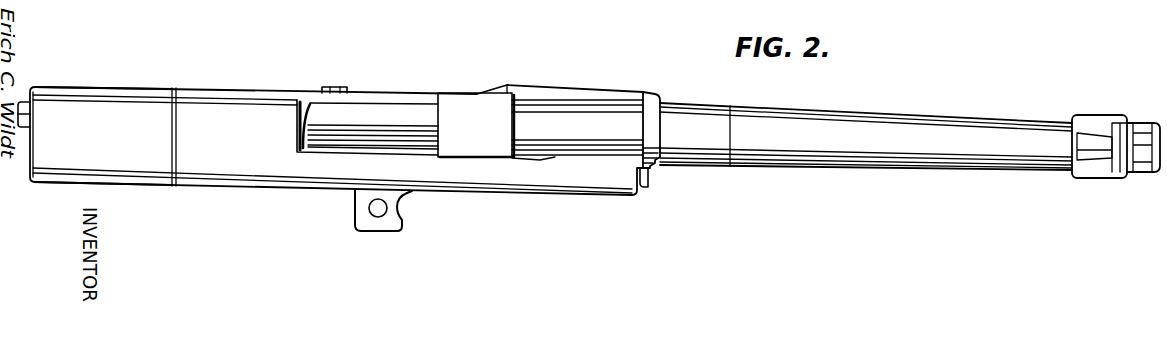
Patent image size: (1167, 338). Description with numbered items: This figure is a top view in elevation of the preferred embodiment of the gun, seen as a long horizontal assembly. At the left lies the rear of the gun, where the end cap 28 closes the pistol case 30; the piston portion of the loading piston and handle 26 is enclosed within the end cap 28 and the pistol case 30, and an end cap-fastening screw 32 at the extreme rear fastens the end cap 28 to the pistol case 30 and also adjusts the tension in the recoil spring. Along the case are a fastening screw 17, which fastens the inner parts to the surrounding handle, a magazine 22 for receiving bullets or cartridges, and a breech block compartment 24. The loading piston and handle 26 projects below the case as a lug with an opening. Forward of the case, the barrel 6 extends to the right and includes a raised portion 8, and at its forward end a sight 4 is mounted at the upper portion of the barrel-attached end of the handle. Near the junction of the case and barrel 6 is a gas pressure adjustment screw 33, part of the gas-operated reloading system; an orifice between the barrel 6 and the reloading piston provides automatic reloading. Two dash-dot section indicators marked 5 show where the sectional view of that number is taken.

The sight 4 is at (1090, 142).
The section line 5- 5 is at (137, 117).
The barrel 6 is at (950, 115).
The raised portion 8 is at (587, 90).
The fastening screw 17 is at (326, 86).
The magazine 22 is at (384, 113).
The breech block compartment 24 is at (454, 100).
The loading piston and handle 26 is at (403, 215).
The end cap 28 is at (138, 90).
The pistol case 30 is at (493, 193).
The end cap-fastening screw 32 is at (23, 100).
The gas pressure adjustment screw 33 is at (645, 188).